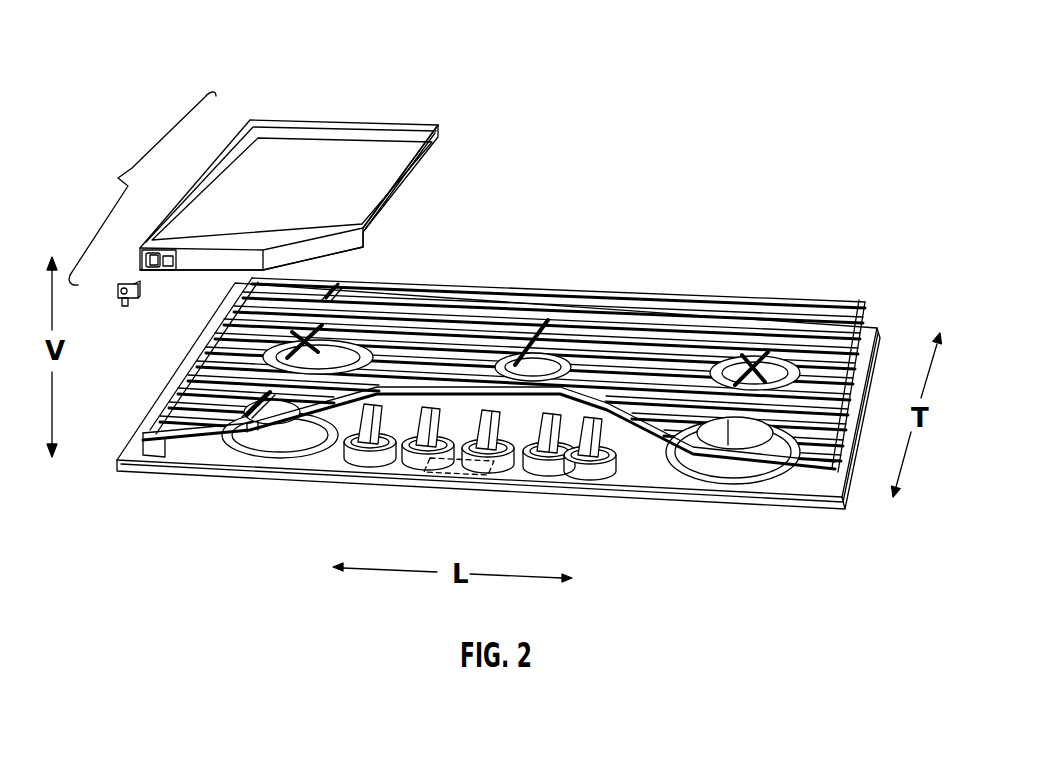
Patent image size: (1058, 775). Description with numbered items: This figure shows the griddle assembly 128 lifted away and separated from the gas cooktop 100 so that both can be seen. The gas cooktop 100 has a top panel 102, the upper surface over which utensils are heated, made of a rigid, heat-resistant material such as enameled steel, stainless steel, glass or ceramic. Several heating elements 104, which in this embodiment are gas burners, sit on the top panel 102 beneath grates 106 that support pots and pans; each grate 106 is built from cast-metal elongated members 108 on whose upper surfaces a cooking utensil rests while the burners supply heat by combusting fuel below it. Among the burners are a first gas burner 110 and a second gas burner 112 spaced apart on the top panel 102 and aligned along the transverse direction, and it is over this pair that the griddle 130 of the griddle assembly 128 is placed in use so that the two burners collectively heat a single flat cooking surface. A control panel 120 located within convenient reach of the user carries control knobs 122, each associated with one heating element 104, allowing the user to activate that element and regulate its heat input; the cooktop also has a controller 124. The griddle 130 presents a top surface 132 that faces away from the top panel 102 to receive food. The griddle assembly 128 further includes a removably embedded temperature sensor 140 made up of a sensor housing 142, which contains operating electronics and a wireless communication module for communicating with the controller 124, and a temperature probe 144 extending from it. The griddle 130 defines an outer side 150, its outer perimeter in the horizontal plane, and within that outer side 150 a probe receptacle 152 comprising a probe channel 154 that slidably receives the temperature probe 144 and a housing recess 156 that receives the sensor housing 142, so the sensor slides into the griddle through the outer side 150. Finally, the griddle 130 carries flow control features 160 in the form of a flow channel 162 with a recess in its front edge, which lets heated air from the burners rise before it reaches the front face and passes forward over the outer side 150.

The gas cooktop 100 is at (502, 353).
The top panel 102 is at (840, 484).
The heating elements 104 is at (355, 340).
The grates 106 is at (786, 296).
The elongated members 108 is at (180, 442).
The first gas burner 110 is at (342, 334).
The second gas burner 112 is at (257, 440).
The control panel 120 is at (488, 476).
The control knobs 122 is at (589, 460).
The controller 124 is at (421, 478).
The griddle assembly 128 is at (276, 230).
The griddle 130 is at (312, 171).
The top surface 132 is at (312, 172).
The temperature sensor 140 is at (138, 299).
The sensor housing 142 is at (152, 333).
The temperature probe 144 is at (140, 284).
The outer side 150 is at (400, 195).
The probe receptacle 152 is at (170, 212).
The probe channel 154 is at (163, 250).
The housing recess 156 is at (175, 263).
The flow control features 160 is at (338, 296).
The flow channel 162 is at (240, 267).